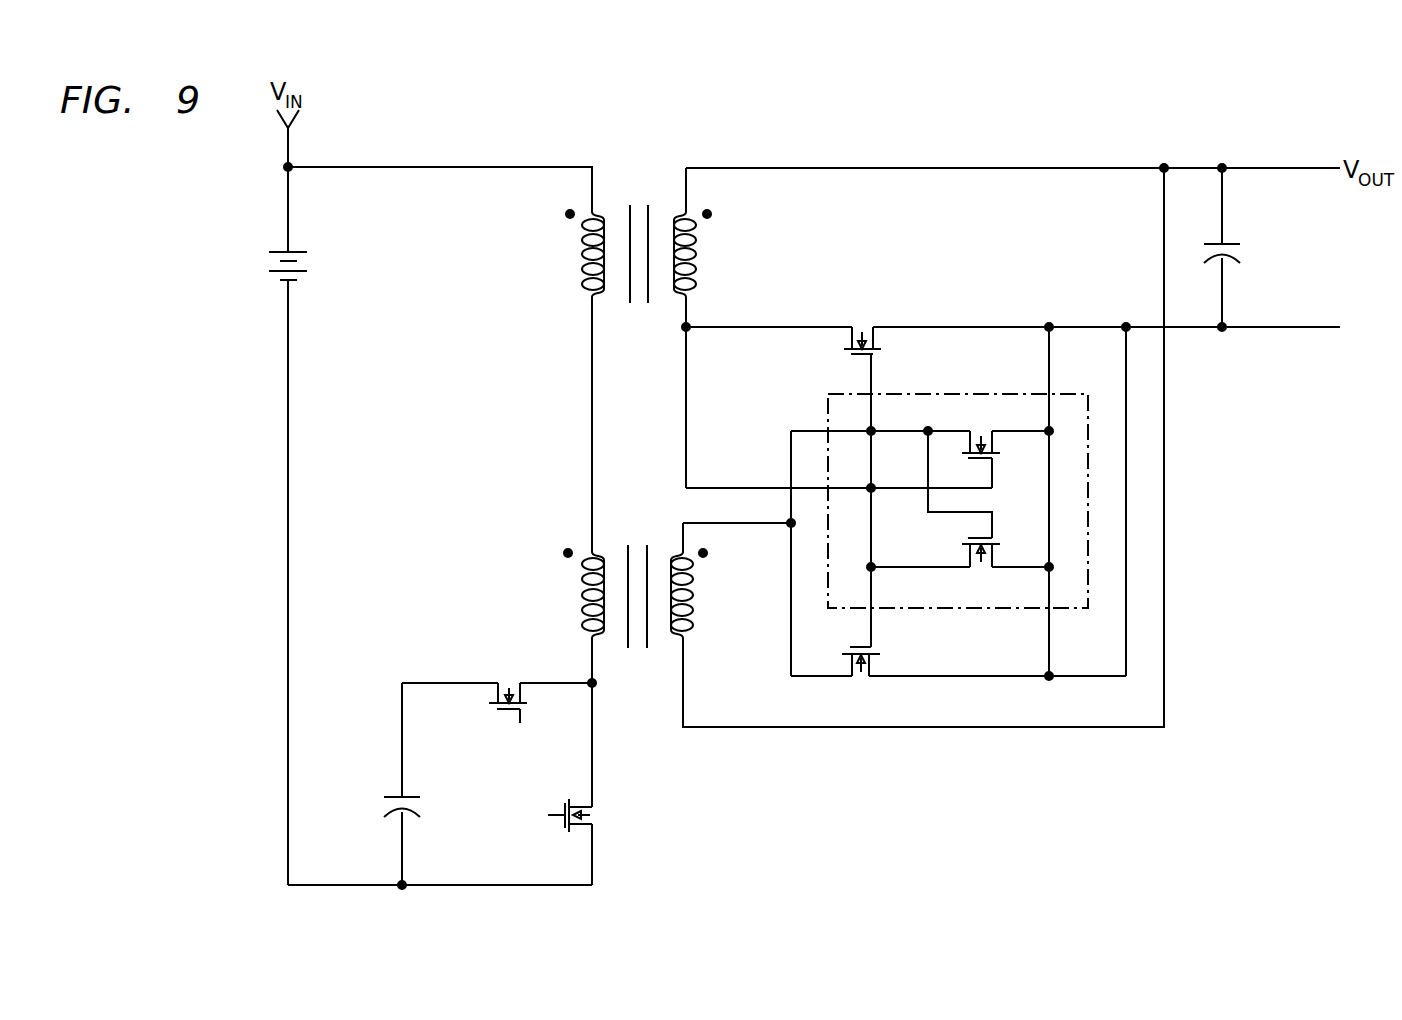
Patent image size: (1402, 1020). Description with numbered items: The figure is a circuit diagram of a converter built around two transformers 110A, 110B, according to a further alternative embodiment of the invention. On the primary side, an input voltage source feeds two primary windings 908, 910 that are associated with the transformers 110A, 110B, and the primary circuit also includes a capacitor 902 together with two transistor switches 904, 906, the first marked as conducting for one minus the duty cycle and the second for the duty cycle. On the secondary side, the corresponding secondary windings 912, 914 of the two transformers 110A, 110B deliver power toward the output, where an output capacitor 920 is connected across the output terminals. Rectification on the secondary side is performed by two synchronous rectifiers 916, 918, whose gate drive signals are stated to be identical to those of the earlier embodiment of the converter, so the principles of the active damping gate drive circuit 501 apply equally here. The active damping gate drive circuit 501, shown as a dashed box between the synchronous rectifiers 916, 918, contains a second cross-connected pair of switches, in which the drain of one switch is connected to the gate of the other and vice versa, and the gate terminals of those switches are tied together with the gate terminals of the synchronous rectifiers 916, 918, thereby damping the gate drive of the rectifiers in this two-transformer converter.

The transformer 110A is at (640, 191).
The transformer 110B is at (640, 655).
The active damping gate drive circuit 501 is at (826, 408).
The capacitor 902 is at (385, 805).
The transistor switch 904 is at (492, 708).
The transistor switch 906 is at (561, 833).
The primary winding 908 is at (580, 259).
The primary winding 910 is at (580, 601).
The secondary winding 912 is at (699, 262).
The secondary winding 914 is at (698, 601).
The synchronous rectifier 916 is at (878, 354).
The synchronous rectifier 918 is at (877, 655).
The output capacitor 920 is at (1245, 255).